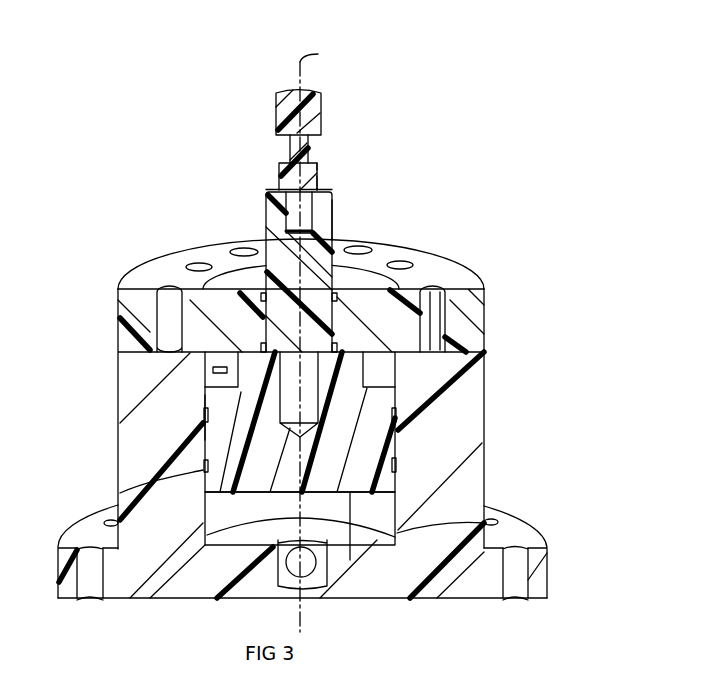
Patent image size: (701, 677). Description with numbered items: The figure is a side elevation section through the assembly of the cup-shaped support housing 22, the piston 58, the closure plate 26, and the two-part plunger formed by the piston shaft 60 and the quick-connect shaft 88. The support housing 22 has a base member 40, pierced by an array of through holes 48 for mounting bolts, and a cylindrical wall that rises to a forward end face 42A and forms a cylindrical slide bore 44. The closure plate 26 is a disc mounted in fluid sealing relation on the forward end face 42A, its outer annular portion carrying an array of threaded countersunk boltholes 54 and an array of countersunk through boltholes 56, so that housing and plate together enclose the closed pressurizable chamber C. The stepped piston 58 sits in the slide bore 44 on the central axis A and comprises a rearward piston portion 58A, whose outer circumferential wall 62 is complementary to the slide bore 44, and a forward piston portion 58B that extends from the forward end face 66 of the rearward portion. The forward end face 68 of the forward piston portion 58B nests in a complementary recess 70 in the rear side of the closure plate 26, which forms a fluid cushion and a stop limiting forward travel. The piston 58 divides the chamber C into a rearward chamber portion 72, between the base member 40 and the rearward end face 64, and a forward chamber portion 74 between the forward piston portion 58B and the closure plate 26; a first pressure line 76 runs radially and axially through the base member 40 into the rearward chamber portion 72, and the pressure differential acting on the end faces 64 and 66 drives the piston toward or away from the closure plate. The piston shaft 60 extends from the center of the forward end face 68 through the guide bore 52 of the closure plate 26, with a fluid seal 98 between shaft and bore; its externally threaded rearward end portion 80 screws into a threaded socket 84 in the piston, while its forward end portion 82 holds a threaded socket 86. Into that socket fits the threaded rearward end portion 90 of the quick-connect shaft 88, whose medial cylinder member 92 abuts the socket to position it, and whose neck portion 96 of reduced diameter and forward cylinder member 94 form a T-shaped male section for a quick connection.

The support housing 22 is at (487, 451).
The closure plate 26 is at (488, 288).
The base member 40 is at (539, 581).
The forward end face 42A is at (462, 352).
The slide bore 44 is at (397, 507).
The through holes 48 is at (515, 597).
The guide bore 52 is at (264, 290).
The threaded countersunk boltholes 54 is at (405, 261).
The countersunk through boltholes 56 is at (438, 277).
The piston 58 is at (402, 449).
The rearward piston portion 58A is at (200, 425).
The forward piston portion 58B is at (207, 382).
The piston shaft 60 is at (337, 222).
The outer circumferential wall 62 is at (397, 478).
The rearward end face 64 is at (350, 560).
The forward end face 66 is at (392, 380).
The forward end face 68 is at (266, 343).
The recess 70 is at (266, 320).
The rearward chamber portion 72 is at (498, 522).
The forward chamber portion 74 is at (213, 370).
The first pressure line 76 is at (298, 570).
The rearward end portion 80 is at (205, 470).
The forward end portion 82 is at (320, 174).
The threaded socket 84 is at (120, 493).
The threaded socket 86 is at (268, 190).
The quick-connect shaft 88 is at (323, 162).
The threaded rearward end portion 90 is at (268, 218).
The medial cylinder member 92 is at (281, 173).
The forward cylinder member 94 is at (283, 90).
The neck portion 96 is at (290, 145).
The fluid seal 98 is at (262, 297).
The central axis A is at (318, 54).
The pressurizable chamber C is at (260, 528).